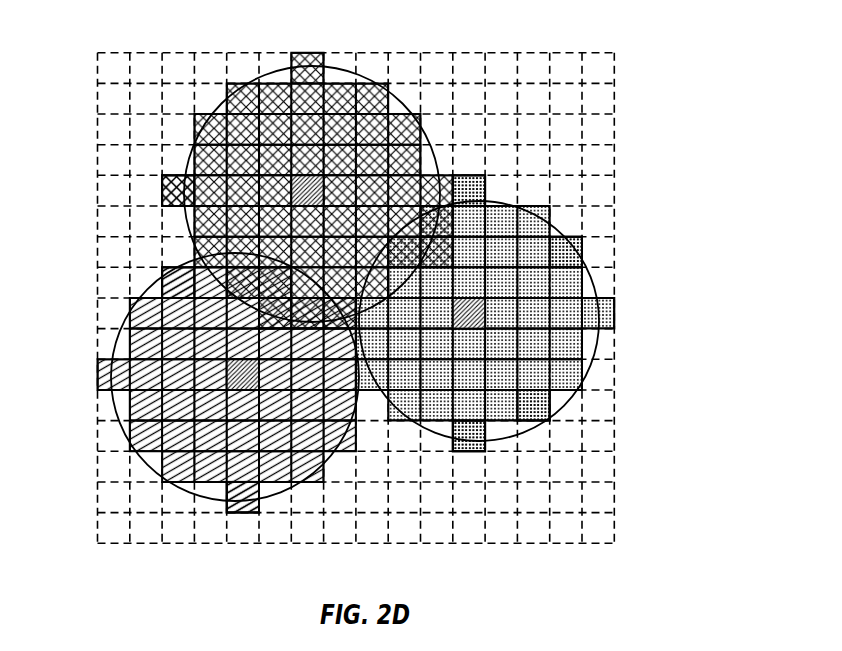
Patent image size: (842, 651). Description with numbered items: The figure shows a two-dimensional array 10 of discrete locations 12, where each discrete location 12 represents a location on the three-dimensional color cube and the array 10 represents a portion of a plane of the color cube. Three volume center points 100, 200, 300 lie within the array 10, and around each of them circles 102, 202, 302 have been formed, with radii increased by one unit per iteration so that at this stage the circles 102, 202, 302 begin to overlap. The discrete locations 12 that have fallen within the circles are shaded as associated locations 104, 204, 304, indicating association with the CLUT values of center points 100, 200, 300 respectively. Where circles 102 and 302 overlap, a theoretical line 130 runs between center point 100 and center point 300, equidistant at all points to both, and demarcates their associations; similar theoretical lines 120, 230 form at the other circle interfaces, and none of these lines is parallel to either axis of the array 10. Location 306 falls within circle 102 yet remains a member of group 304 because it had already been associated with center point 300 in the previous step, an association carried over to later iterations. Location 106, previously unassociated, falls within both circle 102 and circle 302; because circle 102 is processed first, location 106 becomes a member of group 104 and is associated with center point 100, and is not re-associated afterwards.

The two-dimensional array 10 is at (700, 108).
The discrete location 12 is at (600, 68).
The volume center point 100 is at (306, 173).
The circle 102 is at (183, 157).
The associated locations 104 is at (163, 190).
The location 106 is at (452, 287).
The theoretical line 120 is at (190, 278).
The theoretical line 130 is at (487, 203).
The volume center point 200 is at (99, 367).
The circle 202 is at (118, 343).
The associated locations 204 is at (243, 513).
The theoretical line 230 is at (528, 405).
The volume center point 300 is at (515, 340).
The circle 302 is at (563, 225).
The associated locations 304 is at (468, 453).
The discrete location 306 is at (583, 260).